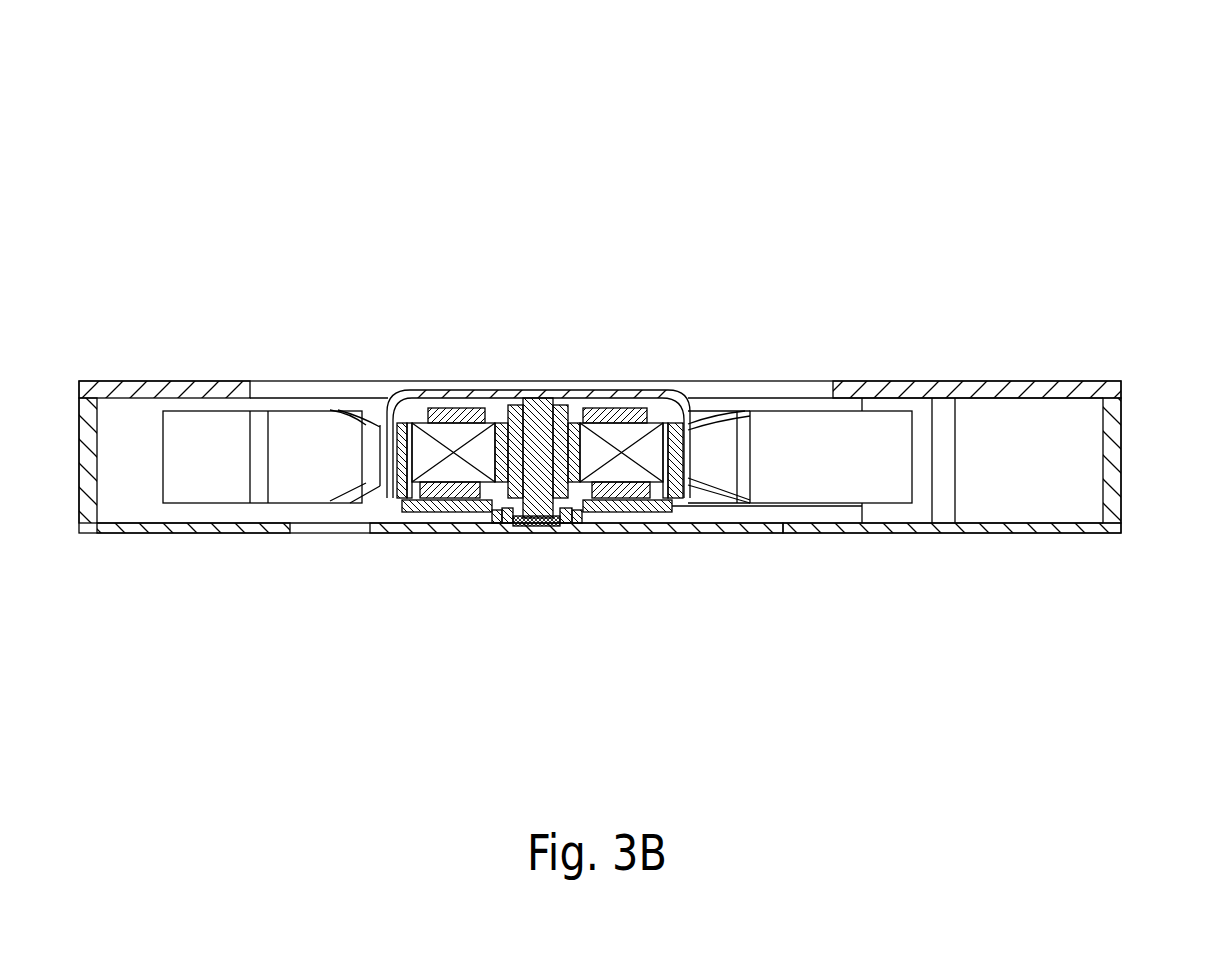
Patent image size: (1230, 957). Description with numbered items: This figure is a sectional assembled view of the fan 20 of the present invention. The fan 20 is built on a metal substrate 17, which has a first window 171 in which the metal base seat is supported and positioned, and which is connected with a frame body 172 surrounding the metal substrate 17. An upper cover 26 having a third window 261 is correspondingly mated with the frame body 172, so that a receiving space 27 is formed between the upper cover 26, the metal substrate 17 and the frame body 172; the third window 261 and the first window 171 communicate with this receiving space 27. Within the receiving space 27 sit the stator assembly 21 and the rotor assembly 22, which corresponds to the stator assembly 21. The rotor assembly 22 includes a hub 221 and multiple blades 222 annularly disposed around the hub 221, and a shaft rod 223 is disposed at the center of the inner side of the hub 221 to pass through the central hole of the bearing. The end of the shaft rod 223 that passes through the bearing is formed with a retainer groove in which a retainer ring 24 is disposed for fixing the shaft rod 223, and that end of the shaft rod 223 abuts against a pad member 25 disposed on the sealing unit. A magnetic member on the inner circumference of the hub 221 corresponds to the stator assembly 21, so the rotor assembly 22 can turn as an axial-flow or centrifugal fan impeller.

The fan 20 is at (1213, 67).
The upper cover 26 is at (978, 392).
The third window 261 is at (788, 392).
The metal substrate 17 is at (1017, 526).
The first window 171 is at (752, 528).
The frame body 172 is at (1113, 493).
The receiving space 27 is at (140, 493).
The rotor assembly 22 is at (673, 398).
The blades 222 is at (188, 443).
The hub 221 is at (402, 397).
The shaft rod 223 is at (541, 398).
The stator assembly 21 is at (620, 440).
The pad member 25 is at (548, 524).
The retainer ring 24 is at (515, 522).